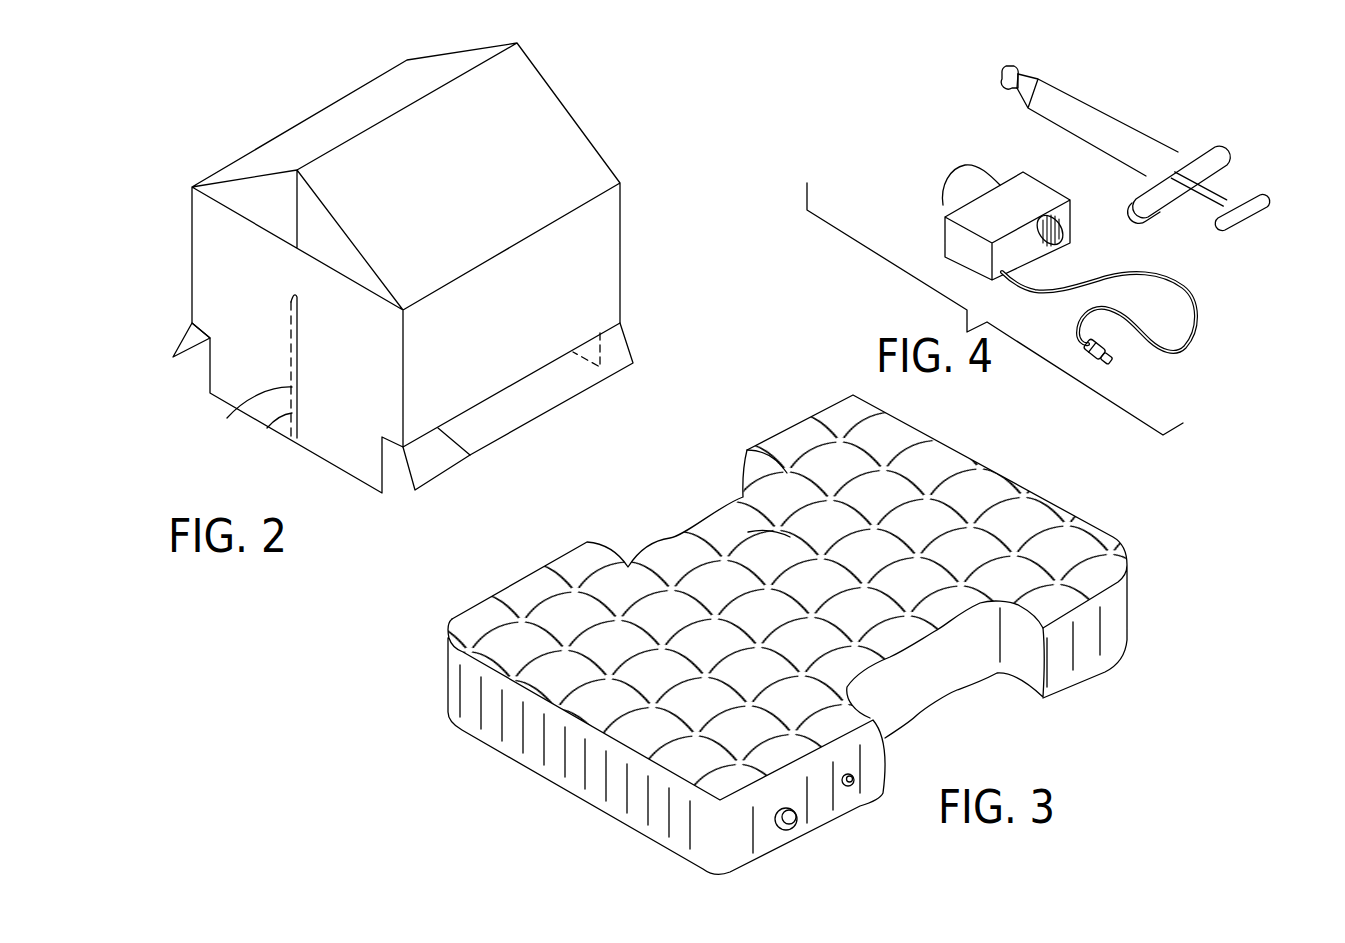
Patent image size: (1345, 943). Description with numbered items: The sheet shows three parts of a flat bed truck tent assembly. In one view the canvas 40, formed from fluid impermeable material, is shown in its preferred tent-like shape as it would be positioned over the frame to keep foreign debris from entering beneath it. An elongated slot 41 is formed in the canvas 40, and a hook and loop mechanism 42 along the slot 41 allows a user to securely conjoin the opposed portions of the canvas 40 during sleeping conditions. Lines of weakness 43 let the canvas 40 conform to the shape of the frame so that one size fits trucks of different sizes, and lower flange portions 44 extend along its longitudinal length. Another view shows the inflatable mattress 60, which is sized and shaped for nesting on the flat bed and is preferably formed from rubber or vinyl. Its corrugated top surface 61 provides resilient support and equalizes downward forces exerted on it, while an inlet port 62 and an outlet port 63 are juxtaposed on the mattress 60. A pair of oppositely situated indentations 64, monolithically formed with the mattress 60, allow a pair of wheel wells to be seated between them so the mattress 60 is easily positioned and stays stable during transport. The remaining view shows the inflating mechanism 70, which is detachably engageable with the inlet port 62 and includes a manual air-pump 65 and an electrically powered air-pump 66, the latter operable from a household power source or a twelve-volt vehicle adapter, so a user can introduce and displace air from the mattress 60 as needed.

In FIG. 2, the canvas 40 is at (587, 267).
In FIG. 2, the elongated slot 41 is at (248, 404).
In FIG. 2, the hook and loop mechanism 42 is at (276, 427).
In FIG. 2, the lines of weakness 43 is at (192, 323).
In FIG. 2, the lower flange portions 44 is at (195, 345).
In FIG. 3, the inflatable mattress 60 is at (1023, 510).
In FIG. 3, the corrugated top surface 61 is at (768, 557).
In FIG. 3, the inlet port 62 is at (851, 786).
In FIG. 3, the outlet port 63 is at (787, 826).
In FIG. 3, the indentations 64 is at (662, 552).
In FIG. 4, the manual air-pump 65 is at (1123, 118).
In FIG. 4, the electrically powered air-pump 66 is at (1055, 187).
In FIG. 4, the inflating mechanism 70 is at (987, 68).